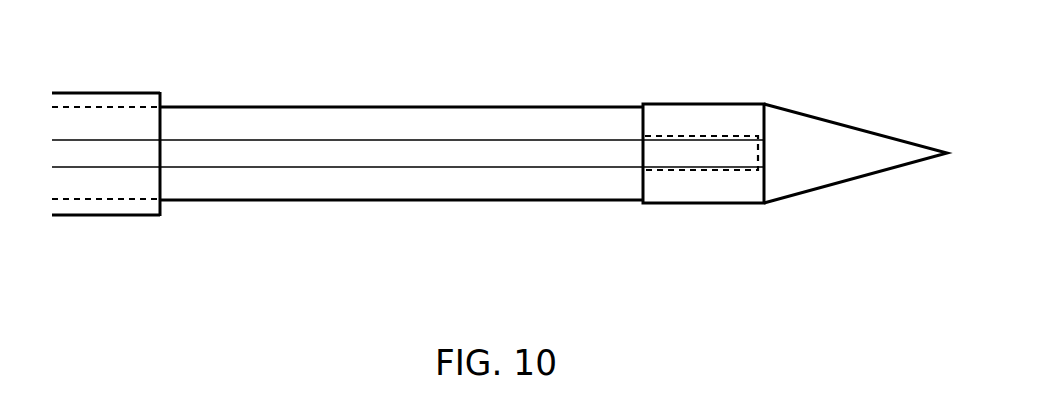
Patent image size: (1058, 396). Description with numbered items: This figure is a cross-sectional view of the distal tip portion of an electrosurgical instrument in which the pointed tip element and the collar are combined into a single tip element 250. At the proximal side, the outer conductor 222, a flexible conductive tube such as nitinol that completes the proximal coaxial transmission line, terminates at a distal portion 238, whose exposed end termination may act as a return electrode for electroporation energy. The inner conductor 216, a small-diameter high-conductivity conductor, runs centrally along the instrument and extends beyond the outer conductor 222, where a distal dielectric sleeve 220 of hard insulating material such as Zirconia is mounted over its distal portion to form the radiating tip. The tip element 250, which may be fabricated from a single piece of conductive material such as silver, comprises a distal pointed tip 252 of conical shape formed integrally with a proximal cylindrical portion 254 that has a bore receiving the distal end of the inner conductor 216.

The inner conductor 216 is at (300, 145).
The distal dielectric sleeve 220 is at (452, 107).
The outer conductor 222 is at (118, 217).
The distal portion of the outer conductor 238 is at (158, 217).
The tip element 250 is at (792, 161).
The distal pointed tip 252 is at (810, 137).
The proximal cylindrical portion 254 is at (700, 103).